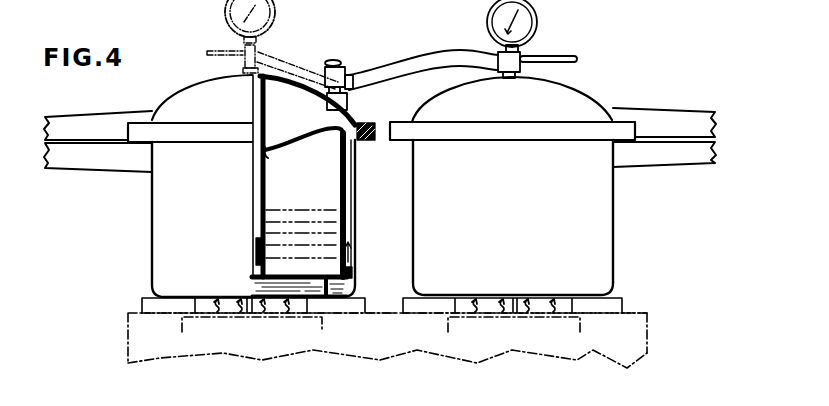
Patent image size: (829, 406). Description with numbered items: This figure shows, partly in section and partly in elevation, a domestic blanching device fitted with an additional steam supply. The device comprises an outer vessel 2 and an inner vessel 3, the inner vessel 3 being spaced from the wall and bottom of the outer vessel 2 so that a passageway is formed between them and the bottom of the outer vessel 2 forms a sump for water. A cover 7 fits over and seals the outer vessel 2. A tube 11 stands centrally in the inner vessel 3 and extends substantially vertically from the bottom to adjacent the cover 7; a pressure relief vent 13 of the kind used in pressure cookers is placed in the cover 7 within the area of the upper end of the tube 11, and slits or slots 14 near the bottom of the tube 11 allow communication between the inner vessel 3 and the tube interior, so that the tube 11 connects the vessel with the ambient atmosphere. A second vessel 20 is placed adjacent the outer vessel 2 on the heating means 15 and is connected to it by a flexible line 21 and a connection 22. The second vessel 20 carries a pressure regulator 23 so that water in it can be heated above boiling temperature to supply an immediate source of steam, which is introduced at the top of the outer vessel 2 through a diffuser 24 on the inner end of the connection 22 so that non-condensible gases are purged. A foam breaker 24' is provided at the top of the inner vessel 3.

The outer vessel 2 is at (158, 199).
The inner vessel 3 is at (342, 215).
The cover 7 is at (180, 102).
The tube 11 is at (264, 195).
The pressure relief vent 13 is at (259, 61).
The slits or slots 14 is at (257, 251).
The heating means 15 is at (628, 352).
The second vessel 20 is at (603, 201).
The flexible line 21 is at (433, 58).
The connection 22 is at (320, 66).
The pressure regulator 23 is at (537, 17).
The diffuser 24 is at (304, 129).
The foam breaker 24' is at (290, 158).